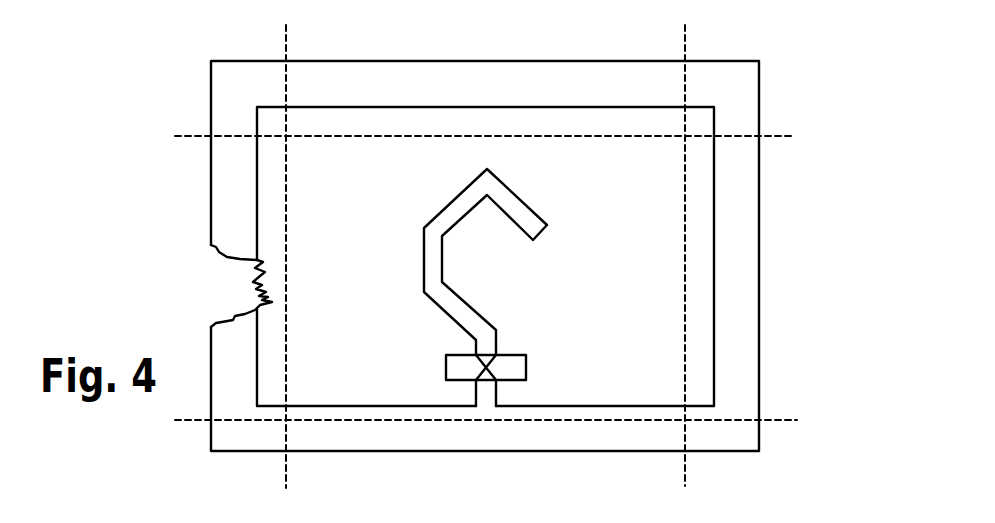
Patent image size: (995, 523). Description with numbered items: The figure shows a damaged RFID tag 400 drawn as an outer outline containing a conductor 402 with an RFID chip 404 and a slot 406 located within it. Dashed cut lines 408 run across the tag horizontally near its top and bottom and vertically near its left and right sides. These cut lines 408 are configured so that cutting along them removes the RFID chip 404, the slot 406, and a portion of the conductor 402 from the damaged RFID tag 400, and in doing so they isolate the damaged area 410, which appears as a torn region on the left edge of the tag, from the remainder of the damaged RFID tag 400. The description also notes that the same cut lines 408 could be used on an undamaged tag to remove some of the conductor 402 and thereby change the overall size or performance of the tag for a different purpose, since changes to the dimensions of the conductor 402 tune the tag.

The damaged RFID tag 400 is at (806, 91).
The conductor 402 is at (570, 167).
The RFID chip 404 is at (513, 374).
The slot 406 is at (450, 196).
The cut lines 408 is at (338, 137).
The damaged area 410 is at (213, 283).